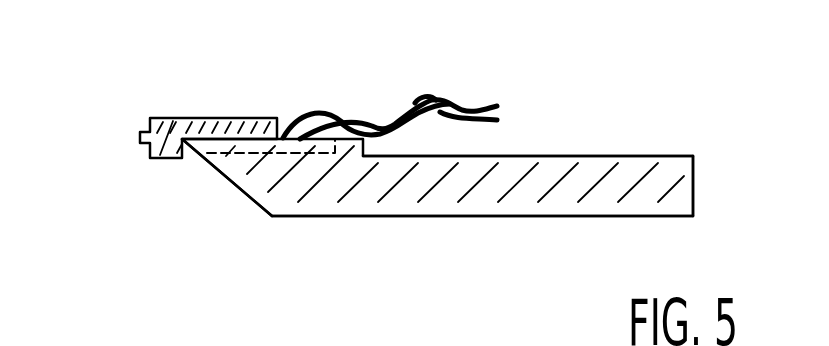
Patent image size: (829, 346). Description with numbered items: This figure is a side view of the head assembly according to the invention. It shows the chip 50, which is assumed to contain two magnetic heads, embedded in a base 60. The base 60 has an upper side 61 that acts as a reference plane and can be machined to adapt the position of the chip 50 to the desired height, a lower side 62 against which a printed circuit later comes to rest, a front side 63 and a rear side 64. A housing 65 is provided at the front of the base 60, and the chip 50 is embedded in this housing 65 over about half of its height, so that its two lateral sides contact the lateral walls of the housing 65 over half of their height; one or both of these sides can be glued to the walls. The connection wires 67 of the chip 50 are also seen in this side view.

The chip 50 is at (167, 129).
The base 60 is at (363, 200).
The upper side 61 is at (593, 155).
The lower side 62 is at (517, 219).
The front side 63 is at (246, 196).
The rear side 64 is at (695, 170).
The housing 65 is at (226, 152).
The connection wires 67 is at (463, 104).